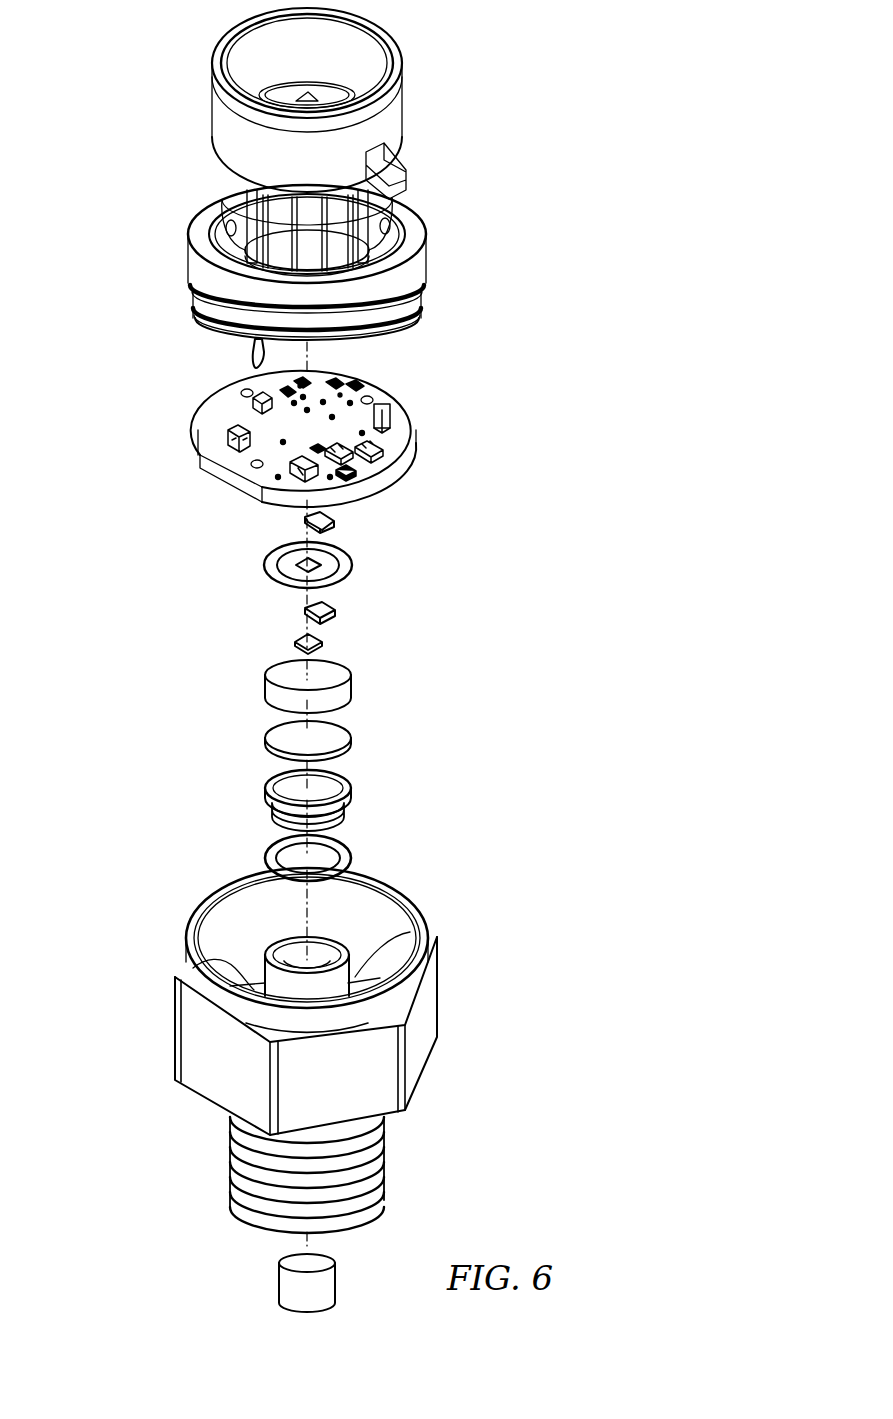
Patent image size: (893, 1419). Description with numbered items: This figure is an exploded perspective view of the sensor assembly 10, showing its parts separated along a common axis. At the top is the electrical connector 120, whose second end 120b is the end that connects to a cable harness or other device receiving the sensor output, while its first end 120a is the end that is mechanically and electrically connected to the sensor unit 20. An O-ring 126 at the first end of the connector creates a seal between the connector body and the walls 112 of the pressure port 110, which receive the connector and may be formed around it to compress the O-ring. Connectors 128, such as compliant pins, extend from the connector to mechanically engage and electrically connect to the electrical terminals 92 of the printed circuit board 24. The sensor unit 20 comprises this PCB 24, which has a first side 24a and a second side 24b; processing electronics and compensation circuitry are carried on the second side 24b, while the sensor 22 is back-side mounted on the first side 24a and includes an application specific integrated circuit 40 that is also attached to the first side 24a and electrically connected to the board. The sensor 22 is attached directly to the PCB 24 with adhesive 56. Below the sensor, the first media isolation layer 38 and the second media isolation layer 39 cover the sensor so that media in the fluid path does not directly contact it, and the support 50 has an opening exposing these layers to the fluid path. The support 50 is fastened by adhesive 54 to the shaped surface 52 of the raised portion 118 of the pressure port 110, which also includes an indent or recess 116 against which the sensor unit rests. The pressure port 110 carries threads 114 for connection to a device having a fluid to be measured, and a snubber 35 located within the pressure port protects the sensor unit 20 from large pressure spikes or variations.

The sensor assembly 10 is at (152, 25).
The sensor unit 20 is at (492, 358).
The sensor 22 is at (300, 641).
The printed circuit board 24 is at (205, 412).
The first side of the PCB 24a is at (404, 484).
The second side of the PCB 24b is at (400, 428).
The snubber 35 is at (336, 1284).
The first media isolation layer 38 is at (265, 684).
The second media isolation layer 39 is at (265, 740).
The application specific integrated circuit 40 is at (334, 611).
The support 50 is at (265, 786).
The shaped surface 52 is at (330, 950).
The adhesive 54 is at (265, 848).
The adhesive 56 is at (362, 510).
The electrical terminals 92 is at (245, 391).
The pressure port 110 is at (494, 948).
The walls 112 is at (430, 1014).
The threads 114 is at (377, 1178).
The indent/recess 116 is at (253, 986).
The raised portion 118 is at (338, 983).
The electrical connector 120 is at (432, 178).
The first end of the electrical connector 120a is at (437, 341).
The second end of the electrical connector 120b is at (436, 38).
The O-ring 126 is at (410, 287).
The connectors 128 is at (253, 360).